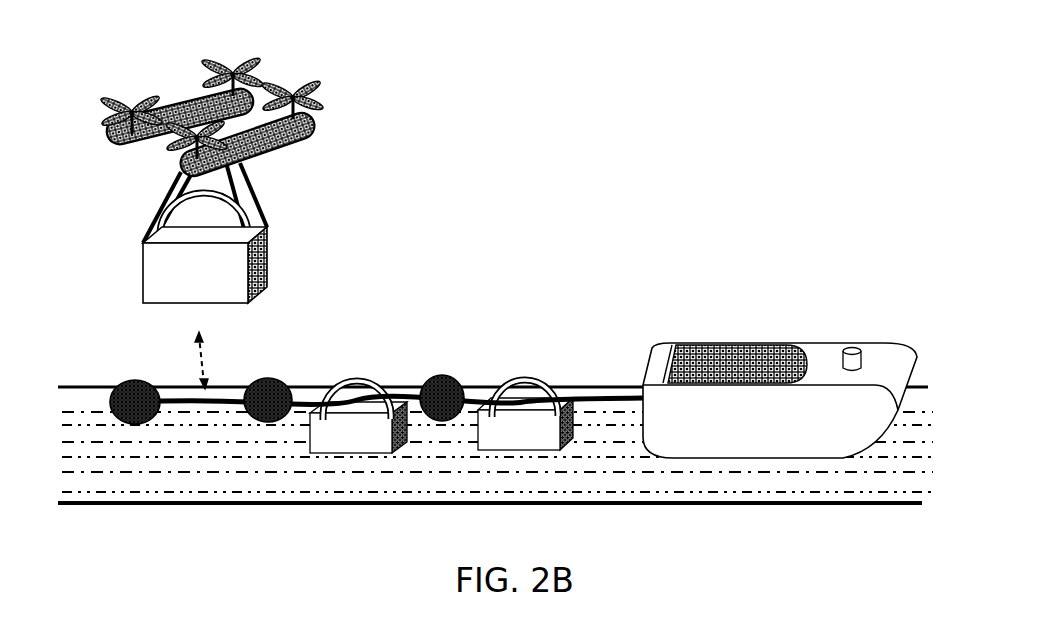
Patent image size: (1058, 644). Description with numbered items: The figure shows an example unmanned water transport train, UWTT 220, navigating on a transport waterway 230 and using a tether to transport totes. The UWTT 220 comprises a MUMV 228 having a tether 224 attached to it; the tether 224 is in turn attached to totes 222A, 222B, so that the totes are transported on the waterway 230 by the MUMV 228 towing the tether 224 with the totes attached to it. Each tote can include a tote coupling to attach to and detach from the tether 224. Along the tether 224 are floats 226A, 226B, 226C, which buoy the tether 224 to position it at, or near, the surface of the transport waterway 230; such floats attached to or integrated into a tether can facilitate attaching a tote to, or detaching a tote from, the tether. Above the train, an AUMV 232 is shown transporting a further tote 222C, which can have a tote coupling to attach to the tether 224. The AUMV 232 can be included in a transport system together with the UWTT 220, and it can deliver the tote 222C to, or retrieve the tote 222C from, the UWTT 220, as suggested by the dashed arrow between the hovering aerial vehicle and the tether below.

The unmanned water transport train (UWTT) 220 is at (735, 272).
The tote 222A is at (519, 368).
The tote 222B is at (367, 364).
The tote 222C is at (158, 267).
The tether 224 is at (600, 397).
The float 226A is at (450, 359).
The float 226B is at (285, 368).
The float 226C is at (122, 376).
The MUMV 228 is at (793, 428).
The transport waterway 230 is at (684, 528).
The AUMV 232 is at (190, 100).